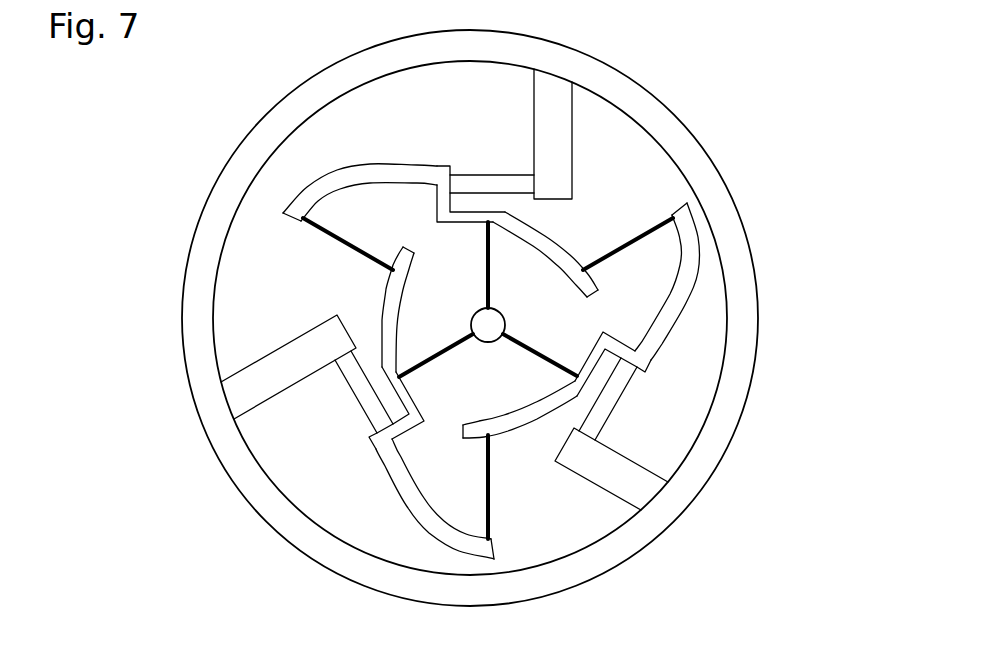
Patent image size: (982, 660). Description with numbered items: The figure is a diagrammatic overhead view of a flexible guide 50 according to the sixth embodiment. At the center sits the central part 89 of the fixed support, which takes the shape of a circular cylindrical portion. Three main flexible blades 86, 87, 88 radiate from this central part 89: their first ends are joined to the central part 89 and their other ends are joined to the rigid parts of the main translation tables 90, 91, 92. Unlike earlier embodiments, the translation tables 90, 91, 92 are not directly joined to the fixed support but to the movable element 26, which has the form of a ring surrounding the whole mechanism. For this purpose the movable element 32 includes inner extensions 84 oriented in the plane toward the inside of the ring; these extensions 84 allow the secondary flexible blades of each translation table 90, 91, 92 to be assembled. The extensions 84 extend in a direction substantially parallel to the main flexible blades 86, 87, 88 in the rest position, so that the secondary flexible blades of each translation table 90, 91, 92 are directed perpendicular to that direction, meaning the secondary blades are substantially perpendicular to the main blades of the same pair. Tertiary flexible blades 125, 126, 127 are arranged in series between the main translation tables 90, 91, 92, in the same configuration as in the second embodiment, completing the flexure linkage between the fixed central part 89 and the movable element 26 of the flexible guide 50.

The flexible guide 50 is at (120, 146).
The movable element 26 is at (748, 190).
The movable element 32 is at (638, 107).
The inner extensions 84 is at (553, 127).
The main flexible blade 86 is at (487, 252).
The main flexible blade 87 is at (533, 350).
The main flexible blade 88 is at (443, 350).
The central part 89 is at (487, 333).
The main translation table 90 is at (447, 137).
The main translation table 91 is at (633, 400).
The main translation table 92 is at (342, 415).
The tertiary flexible blade 125 is at (320, 237).
The tertiary flexible blade 126 is at (633, 247).
The tertiary flexible blade 127 is at (503, 505).